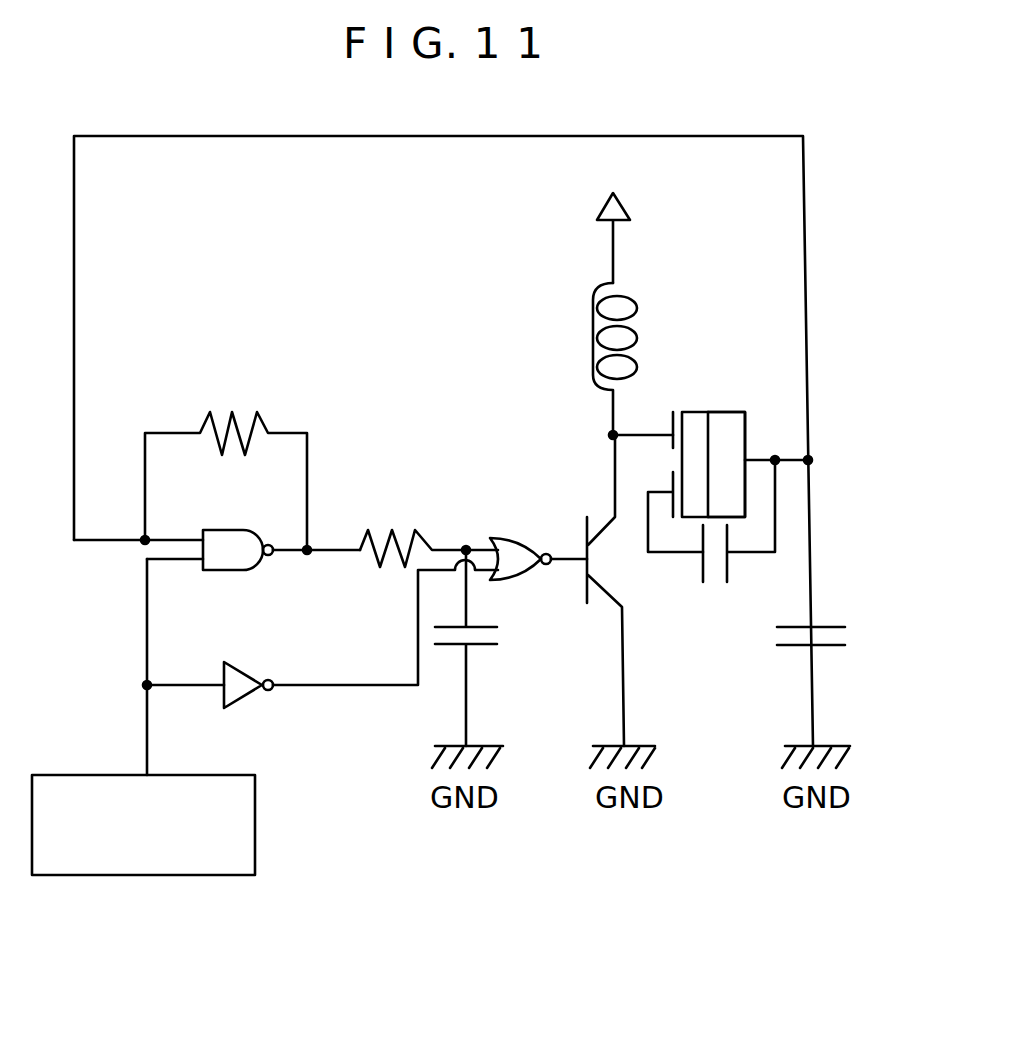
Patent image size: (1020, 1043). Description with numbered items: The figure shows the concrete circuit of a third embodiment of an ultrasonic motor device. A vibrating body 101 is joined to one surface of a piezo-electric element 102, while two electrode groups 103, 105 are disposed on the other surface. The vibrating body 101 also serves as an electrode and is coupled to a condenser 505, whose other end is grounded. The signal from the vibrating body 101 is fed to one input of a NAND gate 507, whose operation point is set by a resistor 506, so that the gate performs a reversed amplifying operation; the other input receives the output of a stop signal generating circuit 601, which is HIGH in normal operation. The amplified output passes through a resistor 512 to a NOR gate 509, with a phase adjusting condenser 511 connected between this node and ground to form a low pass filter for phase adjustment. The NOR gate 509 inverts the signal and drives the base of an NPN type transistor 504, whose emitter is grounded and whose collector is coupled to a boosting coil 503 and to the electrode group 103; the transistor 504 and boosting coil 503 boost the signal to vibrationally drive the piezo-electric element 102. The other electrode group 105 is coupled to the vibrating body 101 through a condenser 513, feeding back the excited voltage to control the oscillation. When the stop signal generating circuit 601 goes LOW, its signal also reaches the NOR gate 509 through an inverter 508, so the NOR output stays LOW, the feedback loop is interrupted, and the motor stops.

The vibrating body 101 is at (723, 412).
The piezo-electric element 102 is at (692, 412).
The electrode group 103 is at (673, 410).
The electrode group 105 is at (672, 478).
The boosting coil 503 is at (592, 333).
The NPN type transistor 504 is at (579, 519).
The condenser 505 is at (848, 641).
The resistor 506 is at (221, 409).
The NAND gate 507 is at (225, 528).
The inverter 508 is at (242, 664).
The NOR gate 509 is at (509, 535).
The phase adjusting condenser 511 is at (505, 640).
The resistor 512 is at (378, 528).
The condenser 513 is at (715, 587).
The stop signal generating circuit 601 is at (255, 828).